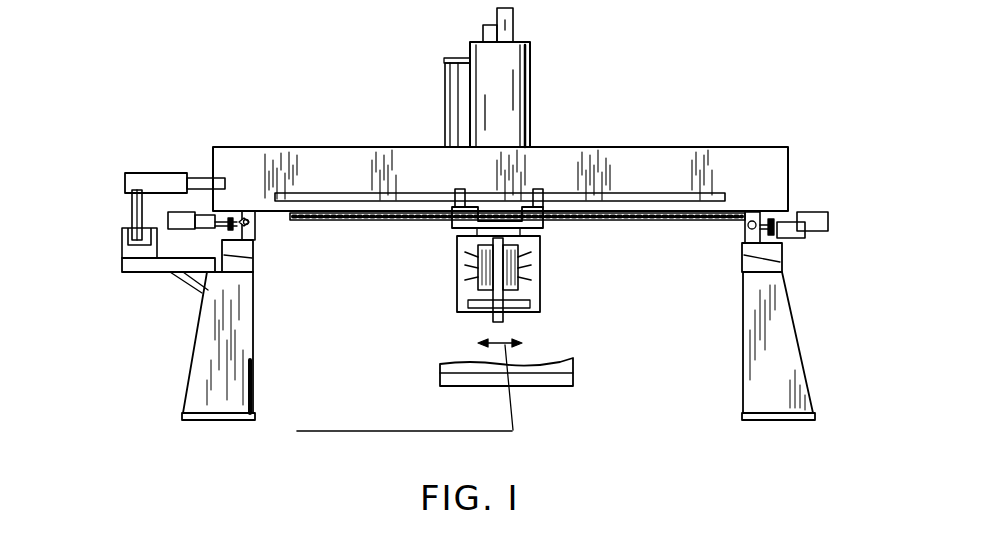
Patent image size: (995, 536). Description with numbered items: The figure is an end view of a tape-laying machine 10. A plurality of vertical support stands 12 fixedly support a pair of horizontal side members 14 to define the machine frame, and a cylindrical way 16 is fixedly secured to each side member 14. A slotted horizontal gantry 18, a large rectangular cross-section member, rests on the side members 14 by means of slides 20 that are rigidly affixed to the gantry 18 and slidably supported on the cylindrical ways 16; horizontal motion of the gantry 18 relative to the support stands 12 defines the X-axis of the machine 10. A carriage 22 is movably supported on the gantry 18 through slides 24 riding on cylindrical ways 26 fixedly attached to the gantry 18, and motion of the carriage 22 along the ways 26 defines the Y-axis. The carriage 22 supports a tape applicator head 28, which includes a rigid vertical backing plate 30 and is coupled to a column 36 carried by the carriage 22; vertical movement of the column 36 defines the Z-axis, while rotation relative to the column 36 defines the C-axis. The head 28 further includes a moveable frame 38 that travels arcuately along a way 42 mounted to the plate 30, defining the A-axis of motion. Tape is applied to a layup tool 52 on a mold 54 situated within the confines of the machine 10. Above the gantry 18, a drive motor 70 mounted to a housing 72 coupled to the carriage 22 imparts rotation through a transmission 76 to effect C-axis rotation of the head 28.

The tape-laying machine 10 is at (787, 80).
The vertical support stand 12 is at (215, 372).
The horizontal side member 14 is at (255, 262).
The cylindrical way 16 is at (248, 211).
The gantry 18 is at (627, 156).
The slide 20 is at (256, 218).
The carriage 22 is at (437, 240).
The slide 24 is at (462, 190).
The cylindrical way 26 is at (415, 195).
The tape applicator head 28 is at (415, 300).
The backing plate 30 is at (545, 285).
The column 36 is at (478, 262).
The moveable frame 38 is at (472, 289).
The arcuate way 42 is at (520, 257).
The layup tool 52 is at (575, 364).
The mold 54 is at (574, 387).
The drive motor 70 is at (514, 14).
The housing 72 is at (532, 86).
The transmission 76 is at (483, 30).